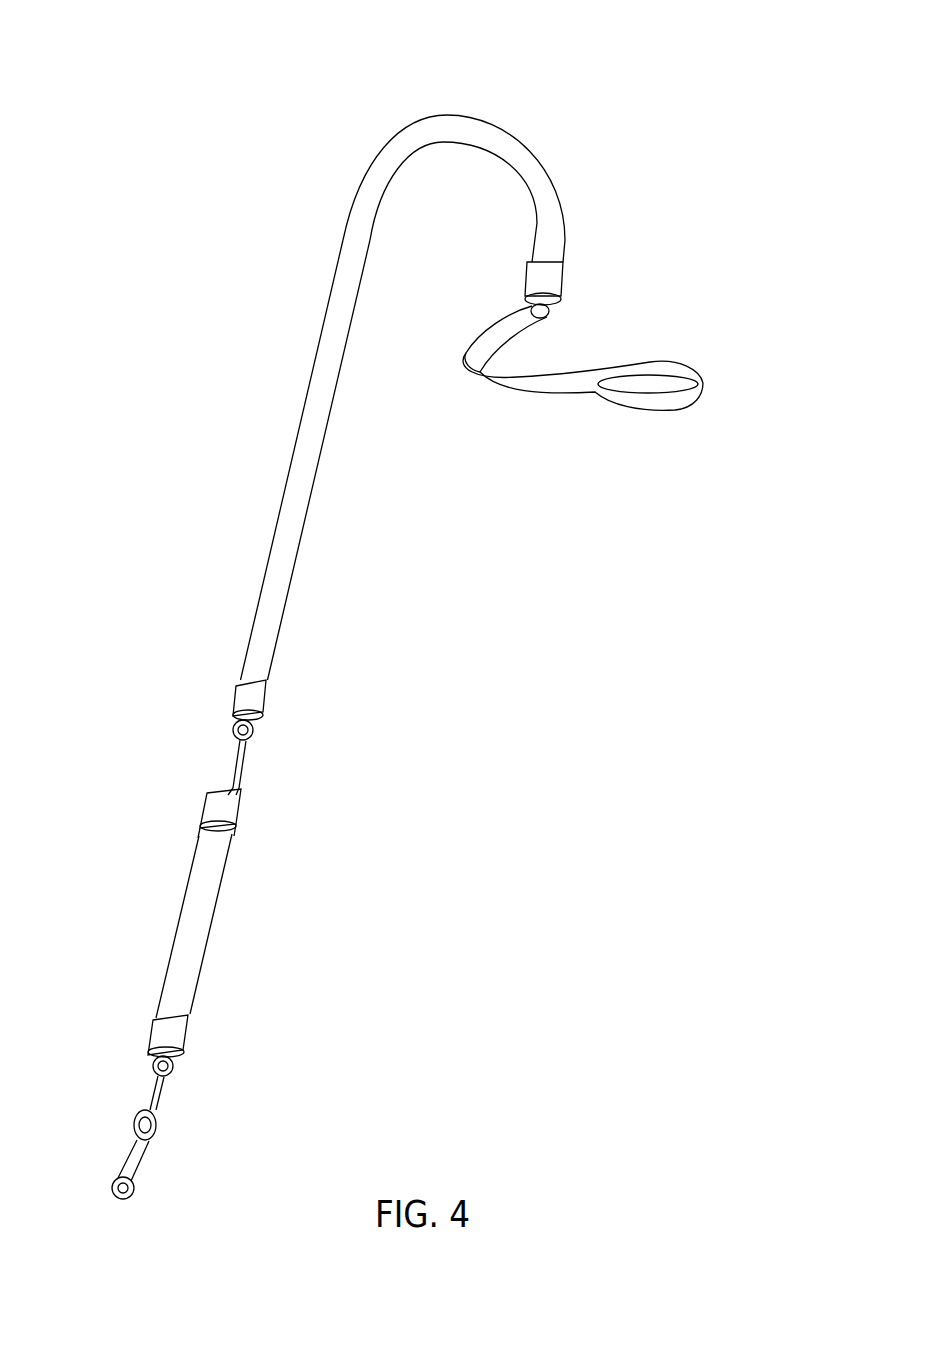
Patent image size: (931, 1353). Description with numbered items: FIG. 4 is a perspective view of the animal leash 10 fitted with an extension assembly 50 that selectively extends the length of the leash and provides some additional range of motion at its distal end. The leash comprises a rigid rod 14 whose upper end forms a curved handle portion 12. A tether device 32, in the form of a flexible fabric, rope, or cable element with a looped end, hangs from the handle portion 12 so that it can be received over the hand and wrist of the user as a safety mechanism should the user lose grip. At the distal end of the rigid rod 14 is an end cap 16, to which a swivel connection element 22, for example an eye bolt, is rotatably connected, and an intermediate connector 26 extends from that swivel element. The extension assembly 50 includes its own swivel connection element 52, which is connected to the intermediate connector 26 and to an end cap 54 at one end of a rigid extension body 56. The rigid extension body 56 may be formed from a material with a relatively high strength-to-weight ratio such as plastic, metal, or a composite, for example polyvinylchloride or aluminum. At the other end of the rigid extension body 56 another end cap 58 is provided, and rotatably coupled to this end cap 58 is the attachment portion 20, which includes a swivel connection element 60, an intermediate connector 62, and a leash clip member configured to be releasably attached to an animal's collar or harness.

The animal leash 10 is at (200, 365).
The handle portion 12 is at (476, 100).
The rigid rod 14 is at (340, 295).
The end cap 16 is at (243, 690).
The attachment portion 20 is at (178, 1157).
The swivel connection element 22 is at (252, 733).
The intermediate connector 26 is at (235, 757).
The tether device 32 is at (722, 383).
The extension assembly 50 is at (147, 917).
The swivel connection element 52 is at (232, 784).
The end cap 54 is at (216, 806).
The rigid extension body 56 is at (200, 910).
The end cap 58 is at (172, 1035).
The swivel connection element 60 is at (153, 1062).
The intermediate connector 62 is at (157, 1095).